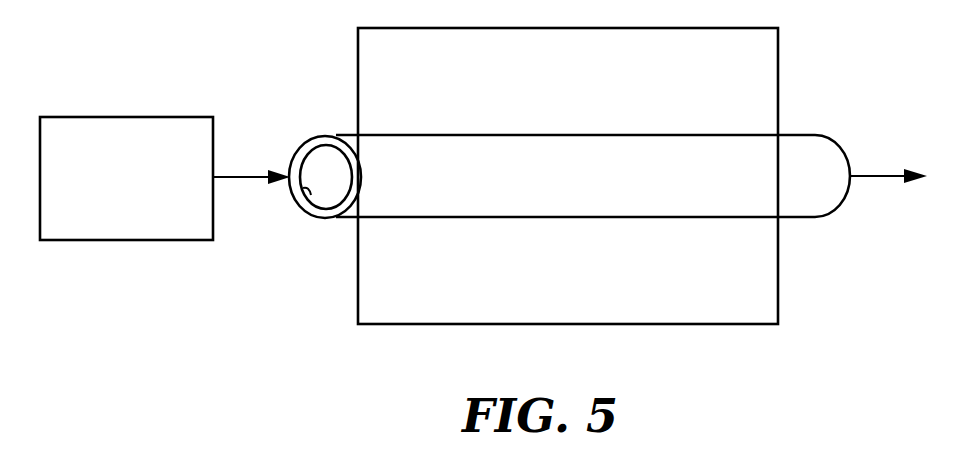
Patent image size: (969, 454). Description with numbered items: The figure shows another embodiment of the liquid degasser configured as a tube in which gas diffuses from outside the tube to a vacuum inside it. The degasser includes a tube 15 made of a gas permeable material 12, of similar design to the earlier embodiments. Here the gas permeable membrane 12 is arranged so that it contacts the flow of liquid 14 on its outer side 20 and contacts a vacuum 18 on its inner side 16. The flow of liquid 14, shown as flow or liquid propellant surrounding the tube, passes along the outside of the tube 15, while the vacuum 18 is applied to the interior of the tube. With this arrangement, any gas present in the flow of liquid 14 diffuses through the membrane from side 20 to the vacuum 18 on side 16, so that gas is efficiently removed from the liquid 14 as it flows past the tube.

The gas permeable material 12 is at (805, 133).
The flow of liquid 14 is at (739, 62).
The tube 15 is at (648, 207).
The side 16 is at (313, 203).
The vacuum 18 is at (119, 116).
The side 20 is at (300, 146).